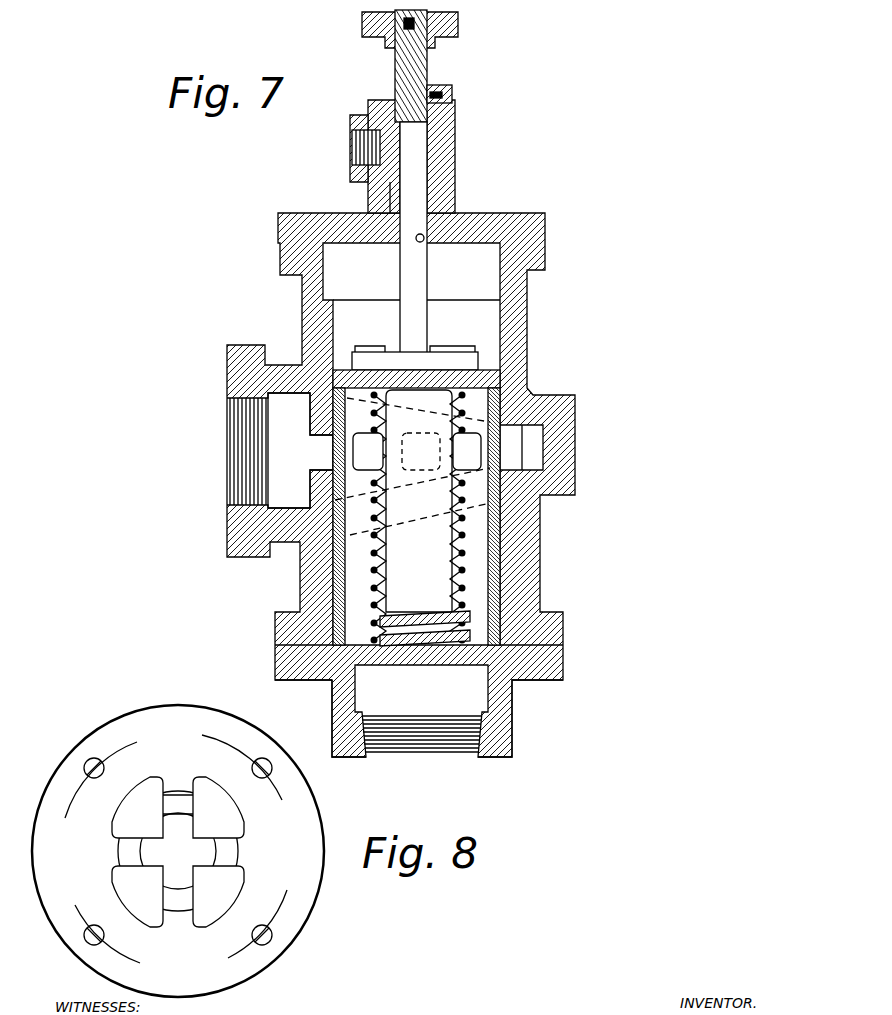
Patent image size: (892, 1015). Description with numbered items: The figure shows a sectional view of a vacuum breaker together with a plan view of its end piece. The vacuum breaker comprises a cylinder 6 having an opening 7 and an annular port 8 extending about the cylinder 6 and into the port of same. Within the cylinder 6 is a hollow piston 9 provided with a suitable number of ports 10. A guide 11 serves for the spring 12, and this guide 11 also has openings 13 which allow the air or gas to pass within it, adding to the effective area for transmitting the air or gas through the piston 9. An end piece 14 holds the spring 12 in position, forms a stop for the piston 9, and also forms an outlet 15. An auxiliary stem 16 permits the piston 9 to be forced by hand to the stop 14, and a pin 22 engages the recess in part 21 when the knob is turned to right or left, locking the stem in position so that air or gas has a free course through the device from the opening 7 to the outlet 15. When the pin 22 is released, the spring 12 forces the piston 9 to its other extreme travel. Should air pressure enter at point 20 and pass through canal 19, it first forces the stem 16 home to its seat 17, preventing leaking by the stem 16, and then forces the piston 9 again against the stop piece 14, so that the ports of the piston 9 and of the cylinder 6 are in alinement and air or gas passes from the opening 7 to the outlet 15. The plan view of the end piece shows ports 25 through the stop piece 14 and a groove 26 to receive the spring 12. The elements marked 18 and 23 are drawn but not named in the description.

In FIG. 7, the cylinder 6 is at (527, 345).
In FIG. 7, the opening 7 is at (227, 460).
In FIG. 7, the annular port 8 is at (300, 450).
In FIG. 7, the hollow piston 9 is at (378, 630).
In FIG. 7, the ports 10 is at (417, 451).
In FIG. 7, the guide 11 is at (395, 580).
In FIG. 7, the spring 12 is at (460, 626).
In FIG. 7, the openings 13 is at (412, 473).
In FIG. 7, the end piece 14 is at (512, 712).
In FIG. 7, the outlet 15 is at (405, 757).
In FIG. 7, the auxiliary stem 16 is at (427, 320).
In FIG. 7, the seat 17 is at (424, 240).
In FIG. 7, the bonnet gland 18 is at (455, 150).
In FIG. 7, the canal 19 is at (383, 236).
In FIG. 7, the point 20 is at (352, 140).
In FIG. 7, the part 21 is at (455, 85).
In FIG. 7, the pin 22 is at (425, 72).
In FIG. 7, the cap 23 is at (458, 24).
In FIG. 8, the ports 25 is at (178, 852).
In FIG. 8, the groove 26 is at (178, 804).